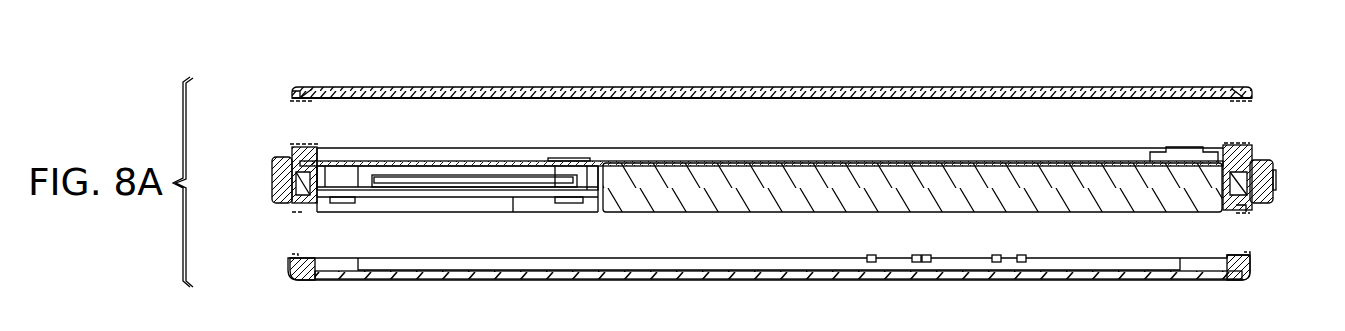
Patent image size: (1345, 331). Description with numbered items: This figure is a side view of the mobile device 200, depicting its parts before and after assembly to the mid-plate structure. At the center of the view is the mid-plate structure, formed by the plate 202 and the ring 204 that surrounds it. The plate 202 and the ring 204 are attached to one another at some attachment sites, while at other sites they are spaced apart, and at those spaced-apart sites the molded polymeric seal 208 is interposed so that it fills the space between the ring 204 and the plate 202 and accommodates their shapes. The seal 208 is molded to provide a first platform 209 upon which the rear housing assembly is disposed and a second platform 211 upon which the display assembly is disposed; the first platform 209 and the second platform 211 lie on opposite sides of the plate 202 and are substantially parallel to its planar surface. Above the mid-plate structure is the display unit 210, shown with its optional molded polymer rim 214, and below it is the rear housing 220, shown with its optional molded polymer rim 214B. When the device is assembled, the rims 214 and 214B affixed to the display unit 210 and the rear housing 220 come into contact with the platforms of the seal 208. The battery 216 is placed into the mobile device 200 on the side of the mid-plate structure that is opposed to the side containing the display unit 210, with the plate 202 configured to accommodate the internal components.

The mobile device 200 is at (1000, 77).
The plate 202 is at (440, 196).
The ring 204 is at (1273, 161).
The seal 208 is at (1253, 152).
The first platform 209 is at (1236, 144).
The display unit 210 is at (437, 87).
The second platform 211 is at (1240, 210).
The molded polymer rim 214 is at (292, 98).
The molded polymer rim 214B is at (292, 259).
The battery 216 is at (815, 212).
The rear housing 220 is at (965, 281).